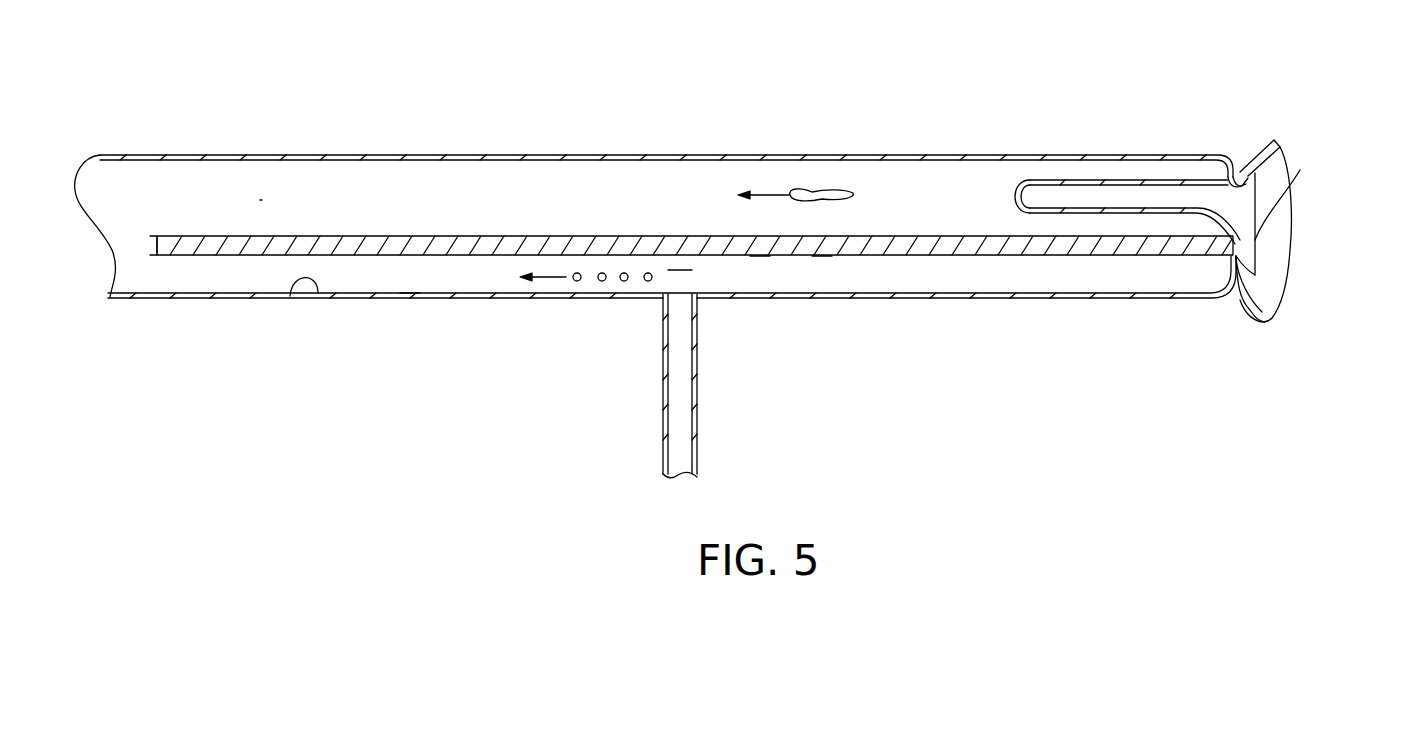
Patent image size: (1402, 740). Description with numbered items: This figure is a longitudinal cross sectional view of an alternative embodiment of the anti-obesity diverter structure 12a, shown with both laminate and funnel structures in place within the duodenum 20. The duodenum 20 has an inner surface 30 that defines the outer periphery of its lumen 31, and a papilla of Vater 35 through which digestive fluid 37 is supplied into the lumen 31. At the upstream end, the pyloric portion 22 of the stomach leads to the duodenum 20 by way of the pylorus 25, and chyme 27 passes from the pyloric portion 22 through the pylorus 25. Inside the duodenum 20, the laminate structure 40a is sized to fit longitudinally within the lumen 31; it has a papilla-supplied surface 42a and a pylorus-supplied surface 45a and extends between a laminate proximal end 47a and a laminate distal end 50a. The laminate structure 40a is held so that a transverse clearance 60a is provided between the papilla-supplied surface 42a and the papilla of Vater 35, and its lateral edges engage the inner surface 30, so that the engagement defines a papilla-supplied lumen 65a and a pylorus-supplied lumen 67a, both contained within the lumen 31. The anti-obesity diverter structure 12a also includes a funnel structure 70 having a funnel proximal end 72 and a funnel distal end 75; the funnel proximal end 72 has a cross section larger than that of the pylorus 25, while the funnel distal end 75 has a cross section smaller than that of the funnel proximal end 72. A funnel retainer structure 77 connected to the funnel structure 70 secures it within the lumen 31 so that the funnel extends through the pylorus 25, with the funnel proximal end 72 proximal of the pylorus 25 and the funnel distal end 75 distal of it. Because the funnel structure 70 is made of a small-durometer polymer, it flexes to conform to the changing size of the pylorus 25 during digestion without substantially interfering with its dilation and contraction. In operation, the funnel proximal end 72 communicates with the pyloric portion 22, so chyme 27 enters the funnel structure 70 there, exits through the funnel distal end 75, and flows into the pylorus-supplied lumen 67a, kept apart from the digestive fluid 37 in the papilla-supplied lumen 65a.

The anti-obesity diverter structure 12a is at (932, 262).
The duodenum 20 is at (515, 300).
The pyloric portion 22 is at (1272, 282).
The pylorus 25 is at (1240, 290).
The chyme 27 is at (822, 193).
The inner surface 30 is at (290, 296).
The lumen 31 is at (280, 190).
The papilla of Vater 35 is at (667, 400).
The digestive fluid 37 is at (602, 282).
The laminate structure 40a is at (760, 262).
The papilla-supplied surface 42a is at (822, 256).
The pylorus-supplied surface 45a is at (483, 236).
The laminate proximal end 47a is at (1258, 228).
The laminate distal end 50a is at (157, 248).
The transverse clearance 60a is at (676, 268).
The papilla-supplied lumen 65a is at (549, 299).
The pylorus-supplied lumen 67a is at (688, 177).
The funnel structure 70 is at (1230, 212).
The funnel proximal end 72 is at (1283, 178).
The funnel distal end 75 is at (1020, 198).
The funnel retainer structure 77 is at (1243, 166).